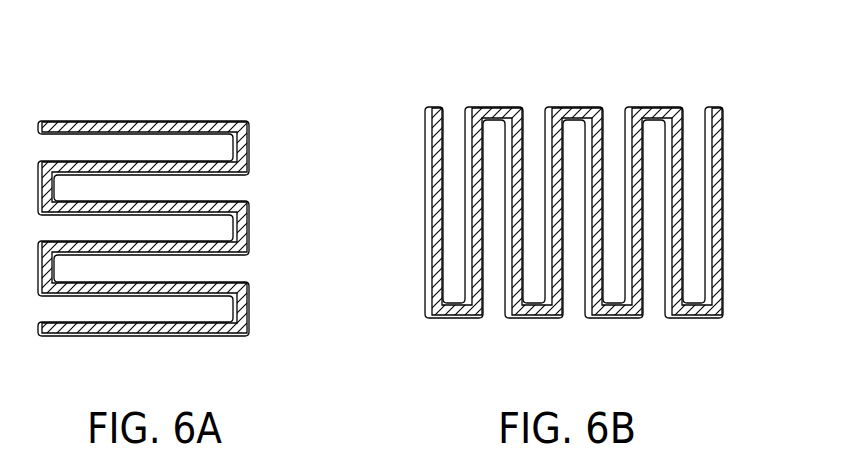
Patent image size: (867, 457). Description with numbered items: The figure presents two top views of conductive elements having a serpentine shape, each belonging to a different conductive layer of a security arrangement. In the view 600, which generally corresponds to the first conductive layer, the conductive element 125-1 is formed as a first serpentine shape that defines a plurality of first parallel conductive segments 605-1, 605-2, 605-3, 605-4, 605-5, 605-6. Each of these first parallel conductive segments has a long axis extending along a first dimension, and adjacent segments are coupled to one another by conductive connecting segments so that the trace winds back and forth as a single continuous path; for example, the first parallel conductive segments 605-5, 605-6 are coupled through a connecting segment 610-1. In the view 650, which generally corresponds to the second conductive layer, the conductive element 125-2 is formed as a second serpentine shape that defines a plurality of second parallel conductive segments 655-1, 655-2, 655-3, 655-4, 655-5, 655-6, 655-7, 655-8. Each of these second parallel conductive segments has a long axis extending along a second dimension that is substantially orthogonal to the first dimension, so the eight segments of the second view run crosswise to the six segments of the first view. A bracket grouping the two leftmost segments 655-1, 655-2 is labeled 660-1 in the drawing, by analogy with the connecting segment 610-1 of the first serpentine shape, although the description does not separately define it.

In FIG. 6A, the view 600 is at (240, 68).
In FIG. 6A, the conductive element 125-1 is at (250, 143).
In FIG. 6A, the first parallel conductive segment 605-1 is at (141, 135).
In FIG. 6A, the first parallel conductive segment 605-2 is at (147, 176).
In FIG. 6A, the first parallel conductive segment 605-3 is at (141, 216).
In FIG. 6A, the first parallel conductive segment 605-4 is at (147, 256).
In FIG. 6A, the first parallel conductive segment 605-5 is at (139, 297).
In FIG. 6A, the first parallel conductive segment 605-6 is at (139, 337).
In FIG. 6A, the connecting segment 610-1 is at (182, 323).
In FIG. 6B, the view 650 is at (665, 48).
In FIG. 6B, the conductive element 125-2 is at (723, 158).
In FIG. 6B, the second parallel conductive segment 655-1 is at (424, 208).
In FIG. 6B, the second parallel conductive segment 655-2 is at (464, 208).
In FIG. 6B, the second parallel conductive segment 655-3 is at (504, 208).
In FIG. 6B, the second parallel conductive segment 655-4 is at (544, 208).
In FIG. 6B, the second parallel conductive segment 655-5 is at (584, 208).
In FIG. 6B, the second parallel conductive segment 655-6 is at (624, 208).
In FIG. 6B, the second parallel conductive segment 655-7 is at (664, 208).
In FIG. 6B, the second parallel conductive segment 655-8 is at (704, 208).
In FIG. 6B, the pair of trace segments 660-1 is at (438, 227).